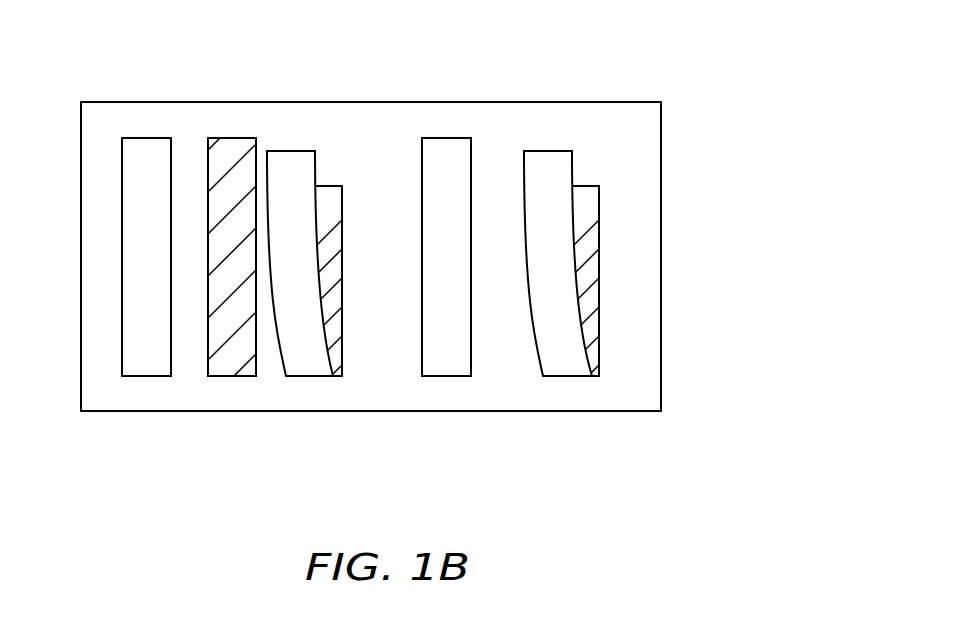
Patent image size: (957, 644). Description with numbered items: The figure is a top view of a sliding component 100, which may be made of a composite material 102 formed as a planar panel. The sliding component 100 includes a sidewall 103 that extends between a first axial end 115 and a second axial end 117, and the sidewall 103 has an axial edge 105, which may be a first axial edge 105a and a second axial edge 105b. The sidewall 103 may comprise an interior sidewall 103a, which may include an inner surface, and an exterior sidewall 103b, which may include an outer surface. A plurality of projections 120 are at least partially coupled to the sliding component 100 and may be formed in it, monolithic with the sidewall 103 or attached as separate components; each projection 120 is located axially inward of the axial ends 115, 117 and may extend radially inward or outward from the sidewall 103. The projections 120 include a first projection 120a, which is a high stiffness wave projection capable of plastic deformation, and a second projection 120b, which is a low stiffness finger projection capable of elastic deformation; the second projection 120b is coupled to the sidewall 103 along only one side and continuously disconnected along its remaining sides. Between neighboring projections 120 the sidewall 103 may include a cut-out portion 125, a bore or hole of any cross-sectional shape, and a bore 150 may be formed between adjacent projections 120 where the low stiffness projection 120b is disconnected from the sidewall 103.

The sliding component 100 is at (718, 42).
The composite material 102 is at (588, 102).
The sidewall 103 is at (661, 230).
The interior sidewall 103a is at (661, 320).
The exterior sidewall 103b is at (110, 102).
The axial edge 105 is at (372, 102).
The first axial edge 105a is at (458, 102).
The second axial edge 105b is at (520, 411).
The first axial end 115 is at (287, 102).
The second axial end 117 is at (398, 411).
The projection 120 is at (290, 151).
The first projection 120a is at (308, 376).
The second projection 120b is at (143, 376).
The cut-out portion 125 is at (235, 376).
The bore 150 is at (340, 326).